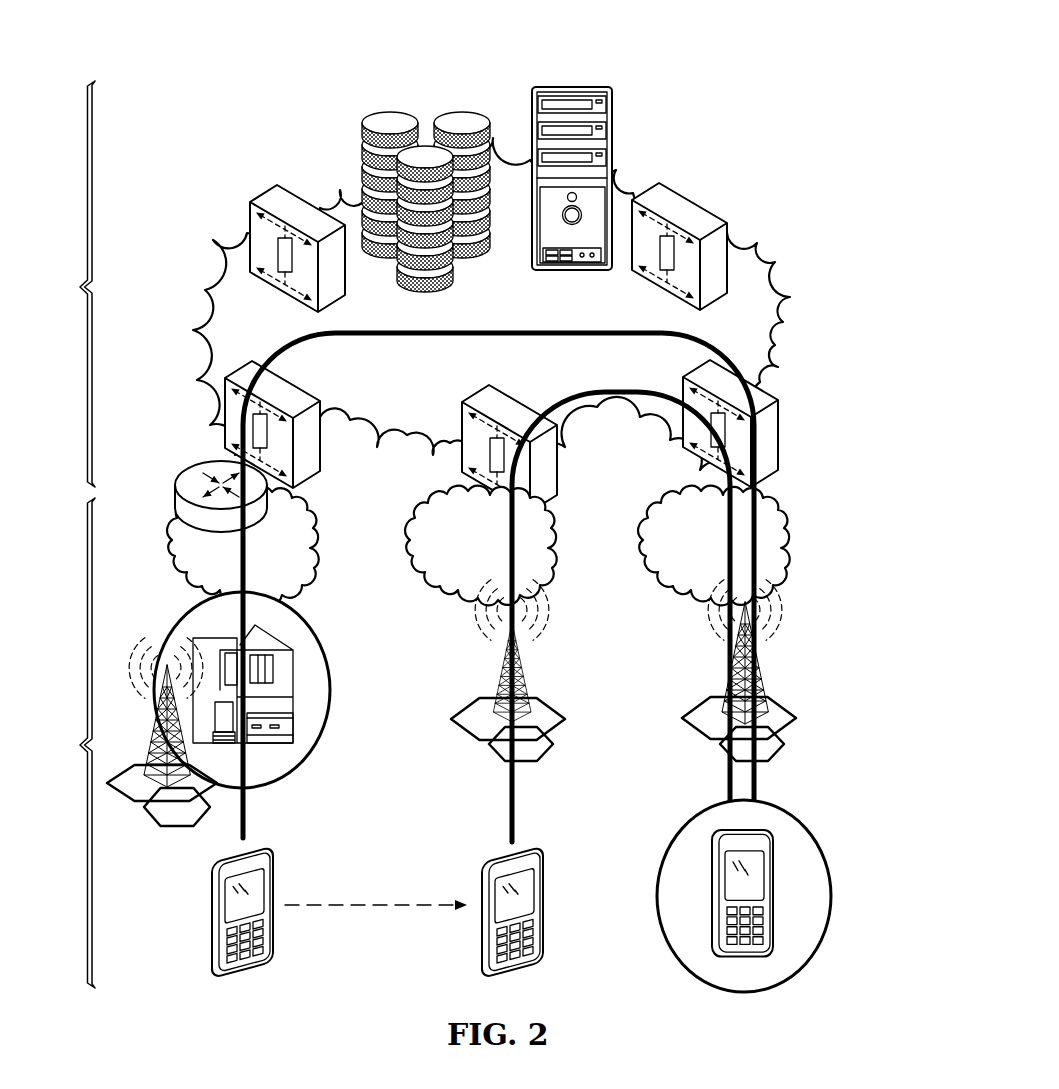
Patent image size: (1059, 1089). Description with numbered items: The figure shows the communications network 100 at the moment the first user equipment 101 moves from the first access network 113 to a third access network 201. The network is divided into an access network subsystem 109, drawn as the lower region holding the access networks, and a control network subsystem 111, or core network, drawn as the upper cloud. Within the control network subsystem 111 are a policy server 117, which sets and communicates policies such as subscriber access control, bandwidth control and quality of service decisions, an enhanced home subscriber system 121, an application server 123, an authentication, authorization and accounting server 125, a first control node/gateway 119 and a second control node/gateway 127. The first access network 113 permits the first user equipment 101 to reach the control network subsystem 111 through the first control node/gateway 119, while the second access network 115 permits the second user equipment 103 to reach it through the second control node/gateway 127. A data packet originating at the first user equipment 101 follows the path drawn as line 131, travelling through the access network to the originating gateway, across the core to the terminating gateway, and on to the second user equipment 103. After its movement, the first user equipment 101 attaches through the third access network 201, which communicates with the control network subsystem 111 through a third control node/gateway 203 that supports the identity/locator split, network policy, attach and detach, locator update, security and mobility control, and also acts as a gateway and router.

The communications network 100 is at (684, 53).
The first user equipment 101 is at (546, 905).
The second user equipment 103 is at (760, 992).
The access network subsystem 109 is at (66, 743).
The control network subsystem 111 is at (413, 284).
The first access network 113 is at (175, 549).
The second access network 115 is at (782, 552).
The policy server 117 is at (262, 199).
The first control node/gateway 119 is at (232, 417).
The enhanced home subscriber system/server 121 is at (382, 118).
The application server 123 is at (577, 87).
The authentication, authorization, and accounting server 125 is at (693, 210).
The second control node/gateway 127 is at (770, 440).
The transmission path line 131 is at (497, 331).
The third access network 201 is at (553, 552).
The third control node/gateway 203 is at (478, 398).